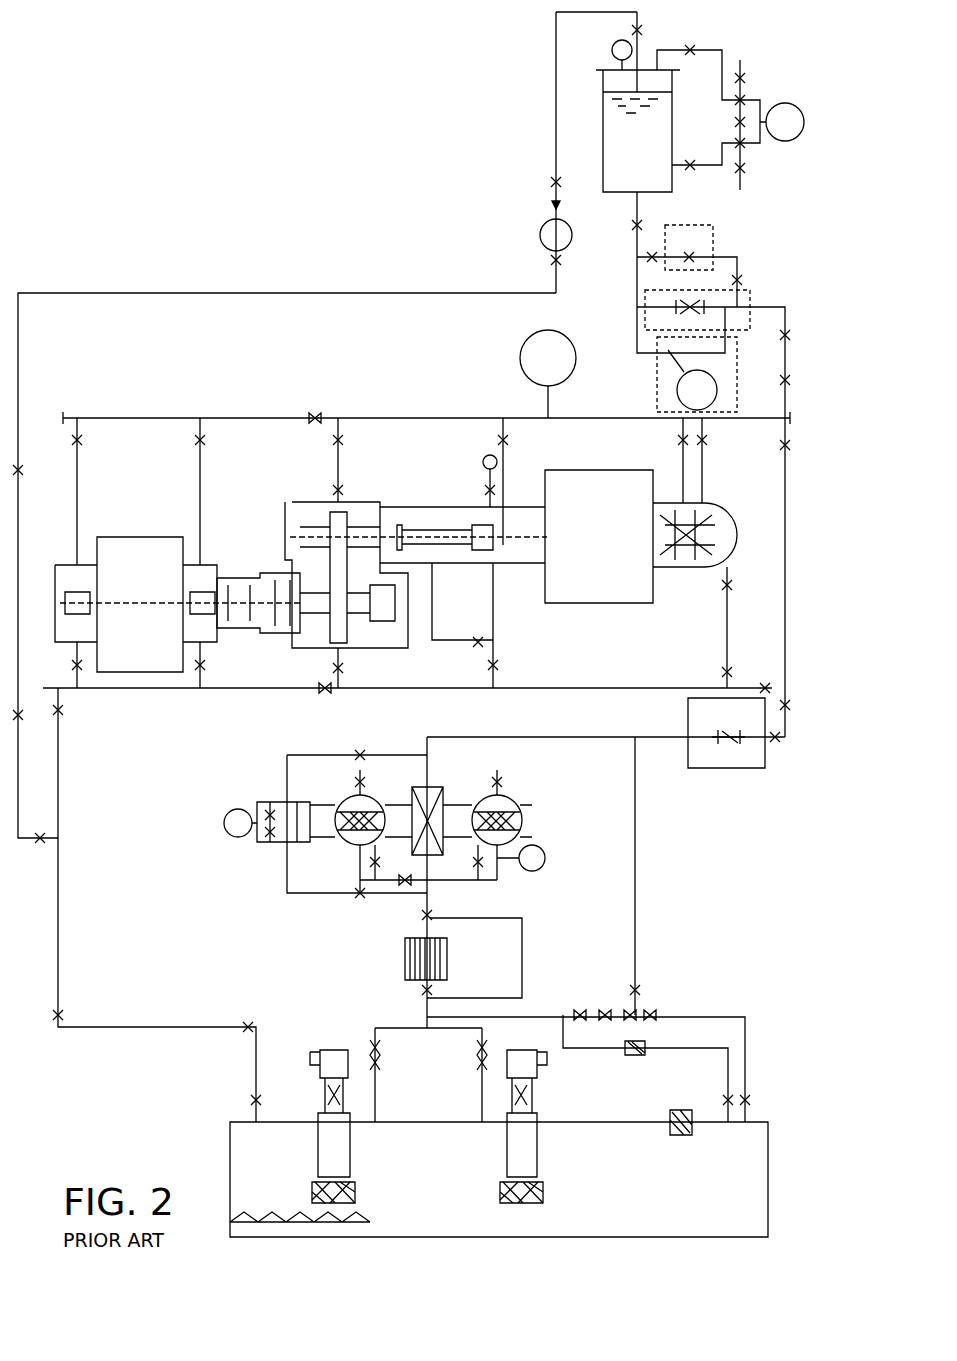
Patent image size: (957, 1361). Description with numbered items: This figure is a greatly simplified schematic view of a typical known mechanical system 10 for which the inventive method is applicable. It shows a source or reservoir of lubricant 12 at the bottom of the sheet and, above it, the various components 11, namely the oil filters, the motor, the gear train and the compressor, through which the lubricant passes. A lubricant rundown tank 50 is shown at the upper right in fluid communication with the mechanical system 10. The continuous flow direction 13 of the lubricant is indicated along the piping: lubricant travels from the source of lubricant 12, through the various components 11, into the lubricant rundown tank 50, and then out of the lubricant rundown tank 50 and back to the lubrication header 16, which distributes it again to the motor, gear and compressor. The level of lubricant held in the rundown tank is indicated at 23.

The mechanical system 10 is at (155, 152).
The lubricant rundown tank 50 is at (603, 145).
The oil level 23 is at (650, 135).
The continuous flow direction 13 is at (318, 293).
The lubrication header 16 is at (400, 418).
The components 11 is at (300, 503).
The source/reservoir of lubricant 12 is at (598, 1182).